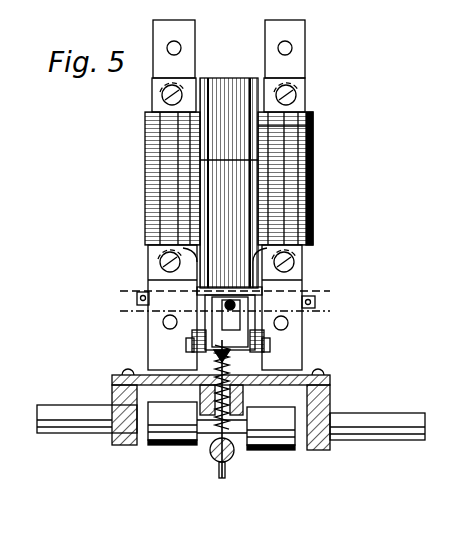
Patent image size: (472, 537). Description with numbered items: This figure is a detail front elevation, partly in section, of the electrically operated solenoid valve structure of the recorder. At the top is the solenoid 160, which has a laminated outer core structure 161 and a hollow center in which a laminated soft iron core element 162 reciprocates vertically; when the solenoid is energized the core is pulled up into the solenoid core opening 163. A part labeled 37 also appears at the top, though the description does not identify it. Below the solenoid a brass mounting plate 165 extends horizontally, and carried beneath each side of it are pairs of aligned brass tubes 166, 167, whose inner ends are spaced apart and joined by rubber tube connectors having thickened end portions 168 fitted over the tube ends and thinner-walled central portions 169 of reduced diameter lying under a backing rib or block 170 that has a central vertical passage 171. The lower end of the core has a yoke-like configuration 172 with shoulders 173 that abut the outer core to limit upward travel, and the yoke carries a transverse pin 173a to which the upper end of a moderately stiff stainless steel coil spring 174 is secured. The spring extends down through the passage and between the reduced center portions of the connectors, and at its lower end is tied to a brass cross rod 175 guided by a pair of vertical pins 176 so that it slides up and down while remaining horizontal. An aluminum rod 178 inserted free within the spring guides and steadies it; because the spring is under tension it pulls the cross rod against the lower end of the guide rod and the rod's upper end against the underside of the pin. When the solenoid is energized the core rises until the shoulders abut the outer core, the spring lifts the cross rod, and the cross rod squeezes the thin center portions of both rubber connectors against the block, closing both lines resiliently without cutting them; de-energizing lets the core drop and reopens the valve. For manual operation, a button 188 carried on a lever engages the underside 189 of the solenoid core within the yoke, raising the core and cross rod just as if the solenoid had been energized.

The terminal screw 37 is at (312, 92).
The laminated outer core structure 161 is at (224, 78).
The solenoid 160 is at (313, 158).
The solenoid core opening 163 is at (270, 133).
The laminated soft iron core element 162 is at (257, 210).
The underside of the solenoid core 189 is at (200, 300).
The shoulders 173 is at (200, 292).
The brass tube 166 is at (150, 312).
The yoke-like configuration 172 is at (200, 325).
The aluminum rod 178 is at (215, 365).
The button 188 is at (240, 300).
The transverse pin 173a is at (245, 348).
The coil spring 174 is at (240, 370).
The brass mounting plate 165 is at (333, 383).
The backing rib or block 170 is at (200, 396).
The central vertical passage 171 is at (243, 396).
The brass tube 167 is at (70, 396).
The thickened end portions 168 is at (180, 441).
The thinner-walled central portions 169 is at (246, 447).
The brass cross rod 175 is at (226, 478).
The vertical pin 176 is at (215, 474).